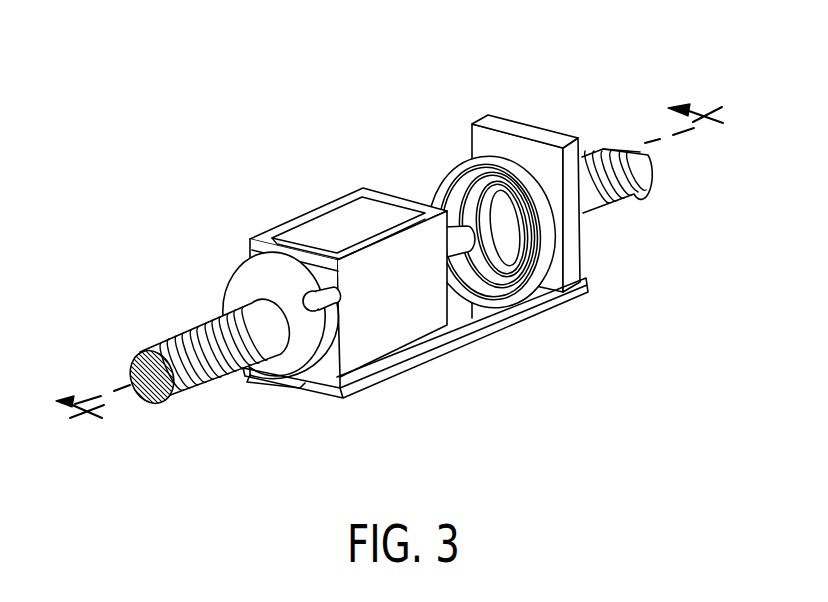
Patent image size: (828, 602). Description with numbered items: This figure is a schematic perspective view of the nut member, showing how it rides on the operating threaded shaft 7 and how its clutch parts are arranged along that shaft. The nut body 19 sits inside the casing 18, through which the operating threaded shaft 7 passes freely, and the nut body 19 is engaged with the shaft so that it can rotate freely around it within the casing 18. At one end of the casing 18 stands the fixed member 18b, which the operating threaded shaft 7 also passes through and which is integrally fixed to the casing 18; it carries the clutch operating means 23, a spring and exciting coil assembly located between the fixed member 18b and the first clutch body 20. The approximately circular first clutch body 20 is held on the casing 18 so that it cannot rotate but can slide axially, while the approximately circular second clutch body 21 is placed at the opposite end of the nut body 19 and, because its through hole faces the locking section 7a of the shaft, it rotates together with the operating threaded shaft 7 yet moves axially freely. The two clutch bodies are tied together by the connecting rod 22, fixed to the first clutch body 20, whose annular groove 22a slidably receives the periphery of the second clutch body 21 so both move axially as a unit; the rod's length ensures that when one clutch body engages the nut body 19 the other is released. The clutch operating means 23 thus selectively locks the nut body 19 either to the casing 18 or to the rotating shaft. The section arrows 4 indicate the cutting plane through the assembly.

The operating threaded shaft 7 is at (633, 201).
The locking section 7a is at (604, 156).
The casing 18 is at (418, 318).
The fixed member 18b is at (573, 247).
The nut body 19 is at (369, 224).
The first clutch body 20 is at (433, 178).
The second clutch body 21 is at (272, 283).
The connecting rod 22 is at (382, 277).
The annular groove 22a is at (303, 367).
The clutch operating means 23 is at (546, 109).
The section line 4- 4 is at (380, 256).